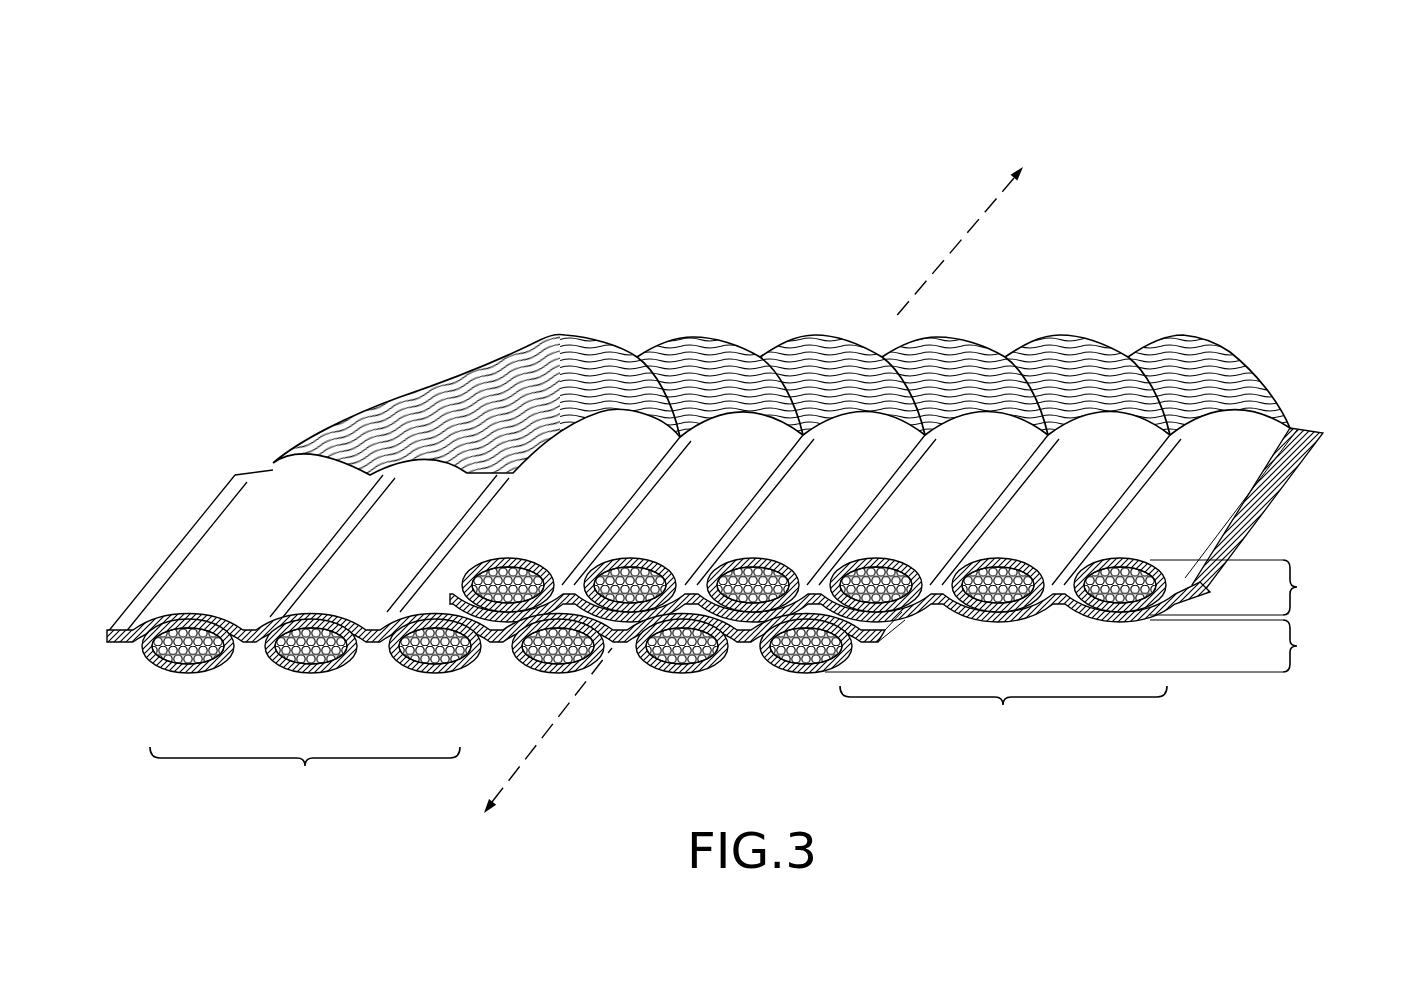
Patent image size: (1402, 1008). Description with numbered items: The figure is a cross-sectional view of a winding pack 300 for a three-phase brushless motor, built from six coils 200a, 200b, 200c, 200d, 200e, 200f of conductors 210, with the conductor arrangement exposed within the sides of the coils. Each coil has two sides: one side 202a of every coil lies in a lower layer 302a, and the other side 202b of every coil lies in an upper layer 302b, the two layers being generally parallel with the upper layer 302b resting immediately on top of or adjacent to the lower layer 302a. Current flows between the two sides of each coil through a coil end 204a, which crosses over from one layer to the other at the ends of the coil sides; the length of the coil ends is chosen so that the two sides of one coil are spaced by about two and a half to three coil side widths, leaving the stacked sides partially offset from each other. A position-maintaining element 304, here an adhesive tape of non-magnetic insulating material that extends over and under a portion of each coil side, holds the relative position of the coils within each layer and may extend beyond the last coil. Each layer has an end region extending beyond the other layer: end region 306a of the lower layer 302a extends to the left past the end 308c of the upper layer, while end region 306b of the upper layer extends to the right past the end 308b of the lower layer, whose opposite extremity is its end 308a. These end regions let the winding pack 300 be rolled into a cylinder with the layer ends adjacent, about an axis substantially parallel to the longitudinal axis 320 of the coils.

The winding pack 300 is at (709, 150).
The longitudinal axis of the coils 320 is at (965, 236).
The coil end 204a is at (1250, 348).
The position-maintaining element 304 is at (1255, 463).
The conductors 210 is at (513, 567).
The end of the upper layer 308c is at (450, 592).
The coil side 202a is at (433, 541).
The coil side 202b is at (1223, 509).
The end of the lower layer 308a is at (147, 615).
The end of the lower layer 308b is at (1167, 612).
The lower layer 302a is at (735, 642).
The upper layer 302b is at (907, 591).
The coil 200a is at (186, 665).
The coil 200b is at (308, 665).
The coil 200c is at (435, 666).
The coil 200d is at (556, 670).
The coil 200e is at (686, 666).
The coil 200f is at (805, 670).
The end region of the lower layer 306a is at (305, 778).
The end region of the upper layer 306b is at (1003, 715).